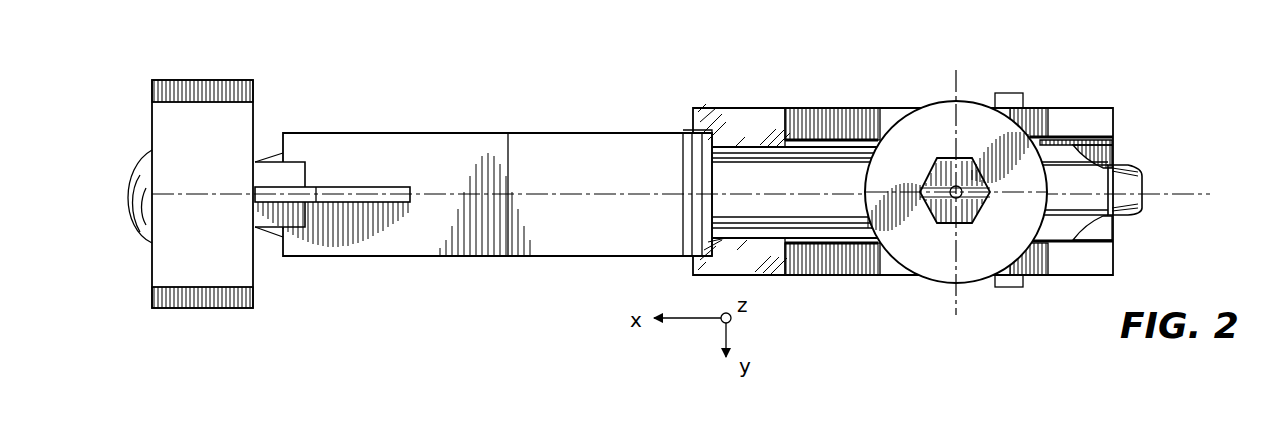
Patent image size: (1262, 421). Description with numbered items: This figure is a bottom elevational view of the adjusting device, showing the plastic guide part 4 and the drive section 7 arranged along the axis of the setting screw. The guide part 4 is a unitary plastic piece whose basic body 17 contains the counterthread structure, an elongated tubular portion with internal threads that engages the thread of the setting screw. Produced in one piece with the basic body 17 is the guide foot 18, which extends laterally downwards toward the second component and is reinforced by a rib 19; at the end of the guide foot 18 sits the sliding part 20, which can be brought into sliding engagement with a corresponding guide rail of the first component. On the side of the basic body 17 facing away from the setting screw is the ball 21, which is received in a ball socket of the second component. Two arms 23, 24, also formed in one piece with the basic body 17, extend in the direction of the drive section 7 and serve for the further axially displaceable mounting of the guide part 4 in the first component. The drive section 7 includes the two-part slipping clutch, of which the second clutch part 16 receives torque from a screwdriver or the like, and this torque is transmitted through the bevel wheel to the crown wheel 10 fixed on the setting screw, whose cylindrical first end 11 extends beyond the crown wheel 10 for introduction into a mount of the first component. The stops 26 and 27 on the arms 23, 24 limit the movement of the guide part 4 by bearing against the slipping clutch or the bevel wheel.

The guide part 4 is at (512, 272).
The drive section 7 is at (937, 296).
The crown wheel 10 is at (1008, 102).
The first end 11 is at (1127, 182).
The second clutch part 16 is at (917, 132).
The basic body 17 is at (547, 157).
The guide foot 18 is at (295, 173).
The rib 19 is at (410, 202).
The sliding part 20 is at (180, 112).
The ball 21 is at (145, 173).
The arm 23 is at (1067, 122).
The arm 24 is at (1082, 258).
The stop 26 is at (1108, 157).
The stop 27 is at (1103, 232).